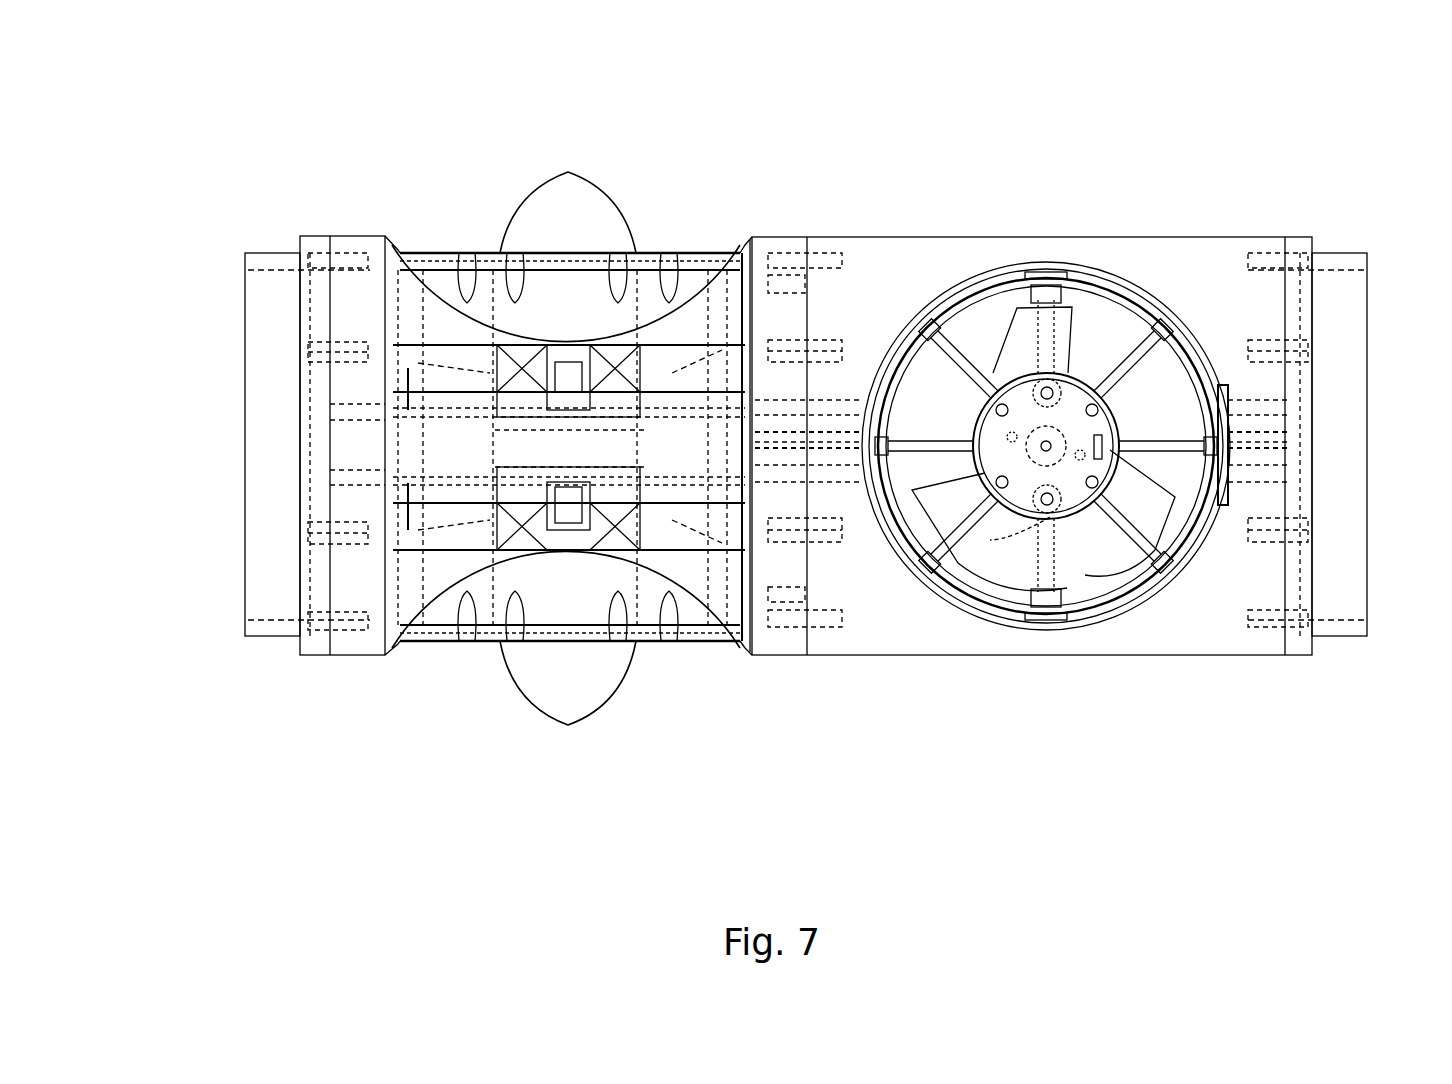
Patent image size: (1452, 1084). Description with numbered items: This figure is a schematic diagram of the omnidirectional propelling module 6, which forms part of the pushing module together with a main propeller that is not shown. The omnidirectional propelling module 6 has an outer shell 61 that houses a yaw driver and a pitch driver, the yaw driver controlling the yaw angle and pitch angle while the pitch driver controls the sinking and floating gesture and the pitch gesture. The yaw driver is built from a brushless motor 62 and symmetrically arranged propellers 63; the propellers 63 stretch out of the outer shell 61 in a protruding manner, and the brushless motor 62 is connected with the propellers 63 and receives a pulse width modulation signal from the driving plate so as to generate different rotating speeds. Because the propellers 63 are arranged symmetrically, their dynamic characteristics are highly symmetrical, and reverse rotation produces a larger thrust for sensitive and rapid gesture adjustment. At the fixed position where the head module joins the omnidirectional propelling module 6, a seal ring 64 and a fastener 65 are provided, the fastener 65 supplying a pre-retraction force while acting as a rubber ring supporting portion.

The omnidirectional propelling module 6 is at (233, 112).
The outer shell 61 is at (933, 630).
The brushless motor 62 is at (437, 448).
The propellers 63 is at (568, 183).
The seal ring 64 is at (260, 472).
The fastener 65 is at (317, 525).